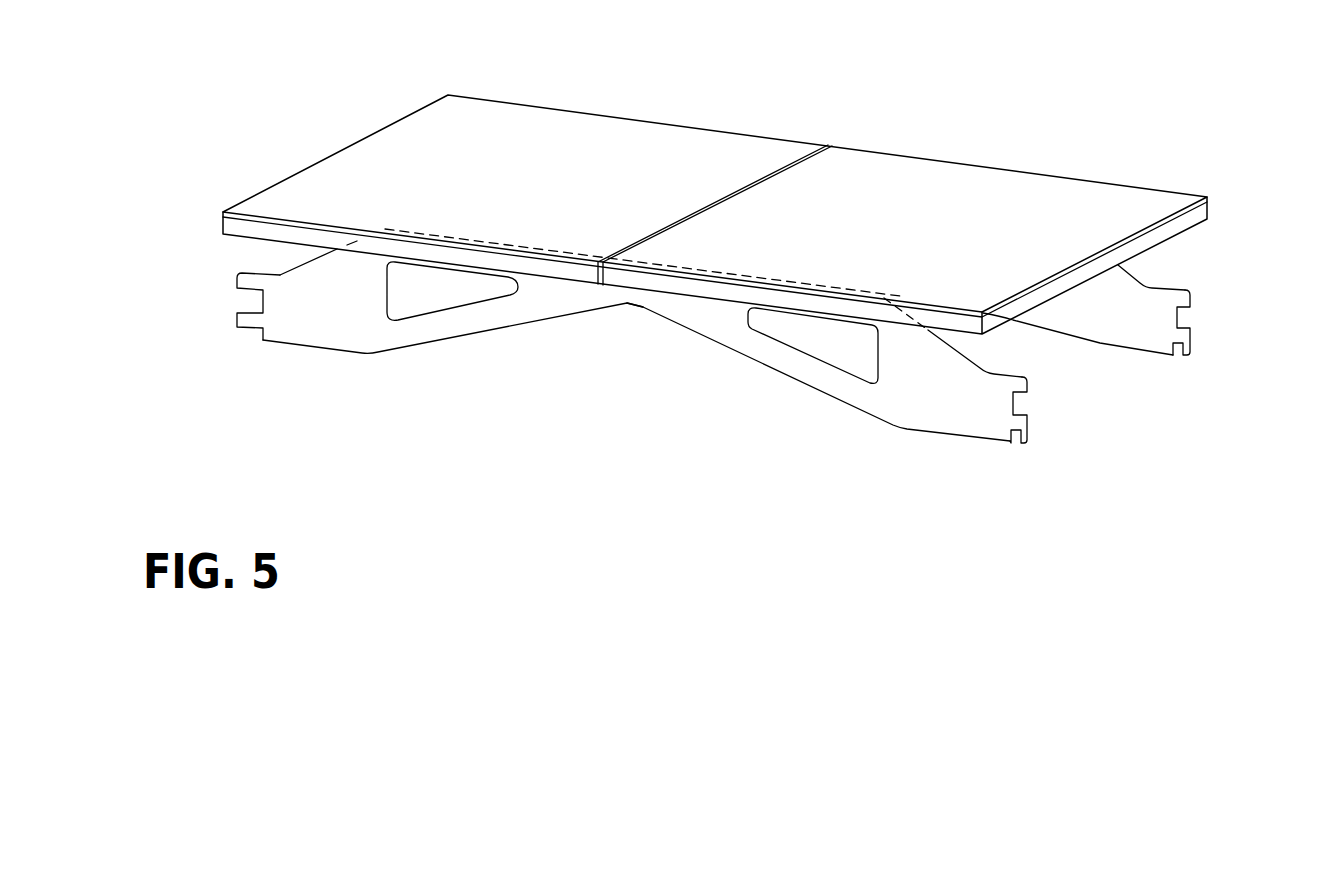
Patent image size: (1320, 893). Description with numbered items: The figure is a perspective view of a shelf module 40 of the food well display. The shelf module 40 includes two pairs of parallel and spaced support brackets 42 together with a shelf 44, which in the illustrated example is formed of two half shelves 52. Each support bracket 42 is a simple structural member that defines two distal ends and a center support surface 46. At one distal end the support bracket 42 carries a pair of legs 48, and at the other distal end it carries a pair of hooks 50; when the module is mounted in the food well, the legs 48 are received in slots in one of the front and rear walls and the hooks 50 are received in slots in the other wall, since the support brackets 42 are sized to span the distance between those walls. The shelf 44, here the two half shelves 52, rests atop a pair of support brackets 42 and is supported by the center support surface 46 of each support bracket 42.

The shelf module 40 is at (641, 118).
The support bracket 42 is at (460, 320).
The shelf 44 is at (920, 215).
The center support surface 46 is at (663, 264).
The legs 48 is at (245, 280).
The hooks 50 is at (1188, 348).
The half shelves 52 is at (517, 118).